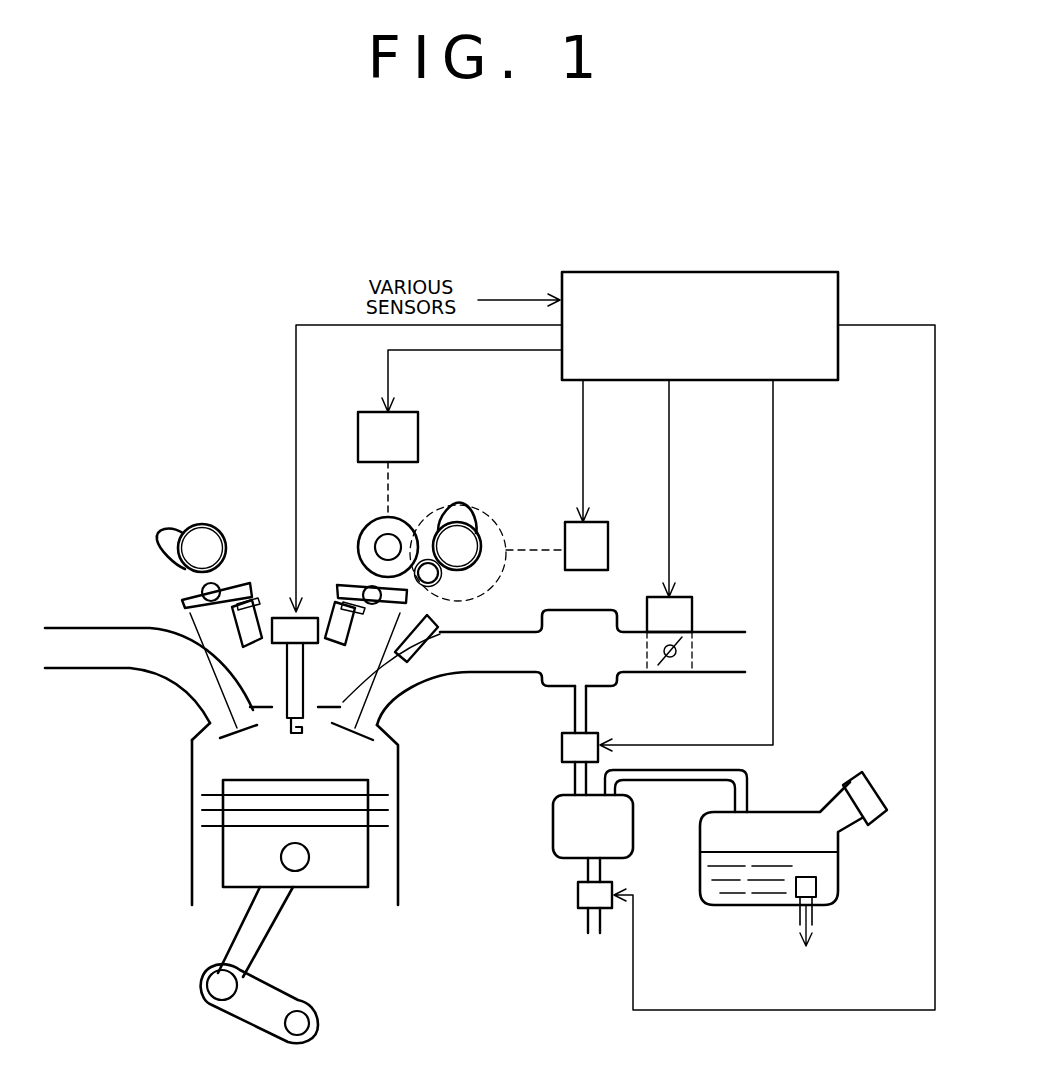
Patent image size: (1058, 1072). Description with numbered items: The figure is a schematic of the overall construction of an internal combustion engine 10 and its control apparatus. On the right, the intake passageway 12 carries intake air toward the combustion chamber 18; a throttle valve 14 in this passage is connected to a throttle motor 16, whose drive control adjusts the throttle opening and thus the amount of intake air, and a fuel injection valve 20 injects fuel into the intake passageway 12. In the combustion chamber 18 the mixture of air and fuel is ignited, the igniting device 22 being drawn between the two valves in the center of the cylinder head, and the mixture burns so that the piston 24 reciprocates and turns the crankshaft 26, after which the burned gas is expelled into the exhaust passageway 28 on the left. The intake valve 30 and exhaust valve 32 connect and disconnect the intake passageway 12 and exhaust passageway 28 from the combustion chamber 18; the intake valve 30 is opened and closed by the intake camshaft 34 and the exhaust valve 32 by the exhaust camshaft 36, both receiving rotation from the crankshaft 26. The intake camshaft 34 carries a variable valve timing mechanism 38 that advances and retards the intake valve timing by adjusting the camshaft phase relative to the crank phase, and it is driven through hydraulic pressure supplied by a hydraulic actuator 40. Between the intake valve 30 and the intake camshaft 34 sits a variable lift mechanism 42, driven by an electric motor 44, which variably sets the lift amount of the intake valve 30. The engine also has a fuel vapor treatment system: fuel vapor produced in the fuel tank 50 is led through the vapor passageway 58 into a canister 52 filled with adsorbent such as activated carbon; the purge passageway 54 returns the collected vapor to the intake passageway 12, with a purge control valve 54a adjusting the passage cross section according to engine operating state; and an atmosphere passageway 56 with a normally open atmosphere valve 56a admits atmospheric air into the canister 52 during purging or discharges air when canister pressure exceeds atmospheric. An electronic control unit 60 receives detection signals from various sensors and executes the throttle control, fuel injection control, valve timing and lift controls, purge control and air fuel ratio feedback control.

The internal combustion engine 10 is at (172, 860).
The intake passageway 12 is at (475, 672).
The throttle valve 14 is at (660, 668).
The throttle motor 16 is at (692, 612).
The combustion chamber 18 is at (215, 763).
The fuel injection valve 20 is at (420, 651).
The spark plug 22 is at (287, 665).
The piston 24 is at (348, 887).
The crankshaft 26 is at (308, 1015).
The exhaust passageway 28 is at (128, 684).
The intake valve 30 is at (345, 704).
The exhaust valve 32 is at (220, 698).
The intake camshaft 34 is at (482, 562).
The exhaust camshaft 36 is at (188, 563).
The variable valve timing mechanism 38 is at (498, 494).
The hydraulic actuator 40 is at (608, 532).
The variable lift mechanism 42 is at (363, 531).
The electric motor 44 is at (410, 412).
The fuel tank 50 is at (838, 864).
The canister 52 is at (555, 832).
The purge passageway 54 is at (572, 702).
The purge control valve 54a is at (596, 733).
The atmosphere passageway 56 is at (586, 868).
The atmosphere valve 56a is at (612, 884).
The vapor passageway 58 is at (650, 781).
The electronic control unit 60 is at (838, 282).